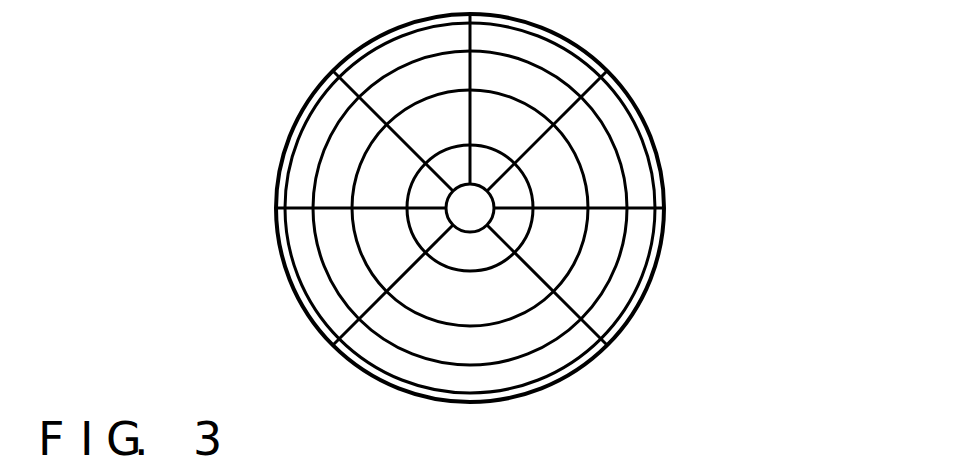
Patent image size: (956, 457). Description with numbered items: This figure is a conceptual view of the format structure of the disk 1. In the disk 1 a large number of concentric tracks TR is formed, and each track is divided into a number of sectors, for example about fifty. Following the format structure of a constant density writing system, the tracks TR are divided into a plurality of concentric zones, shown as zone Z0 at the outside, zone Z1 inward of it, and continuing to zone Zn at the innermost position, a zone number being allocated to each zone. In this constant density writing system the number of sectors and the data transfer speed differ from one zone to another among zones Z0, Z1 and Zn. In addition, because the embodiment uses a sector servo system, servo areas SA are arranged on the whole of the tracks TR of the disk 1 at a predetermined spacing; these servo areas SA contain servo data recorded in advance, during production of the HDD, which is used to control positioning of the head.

The disk 1 is at (663, 163).
The servo areas SA is at (470, 38).
The tracks TR is at (583, 360).
The zone n Zn is at (470, 208).
The zone 1 Z1 is at (470, 273).
The zone 0 Z0 is at (470, 370).